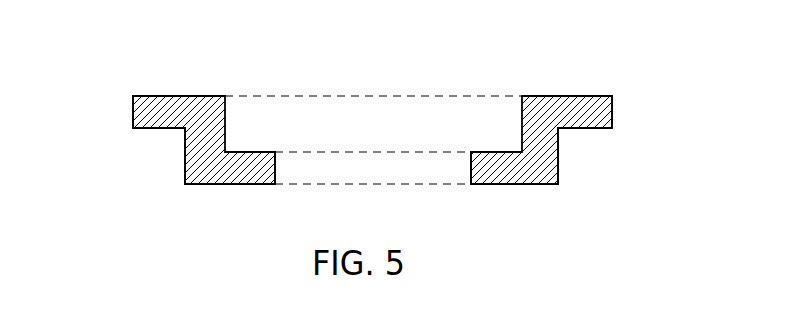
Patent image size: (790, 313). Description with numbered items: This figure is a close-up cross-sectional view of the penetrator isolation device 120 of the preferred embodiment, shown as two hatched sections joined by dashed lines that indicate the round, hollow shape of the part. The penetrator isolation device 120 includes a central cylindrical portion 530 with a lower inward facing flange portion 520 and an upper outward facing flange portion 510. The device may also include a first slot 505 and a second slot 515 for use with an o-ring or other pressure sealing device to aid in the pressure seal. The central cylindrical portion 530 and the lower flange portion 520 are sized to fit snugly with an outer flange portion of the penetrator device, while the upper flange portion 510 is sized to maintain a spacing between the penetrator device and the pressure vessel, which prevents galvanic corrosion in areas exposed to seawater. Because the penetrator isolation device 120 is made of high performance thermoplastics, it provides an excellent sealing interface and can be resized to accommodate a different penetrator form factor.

The penetrator isolation device 120 is at (570, 95).
The first slot 505 is at (230, 184).
The upper outward facing flange portion 510 is at (133, 121).
The second slot 515 is at (185, 165).
The lower inward facing flange portion 520 is at (260, 185).
The central cylindrical portion 530 is at (185, 138).